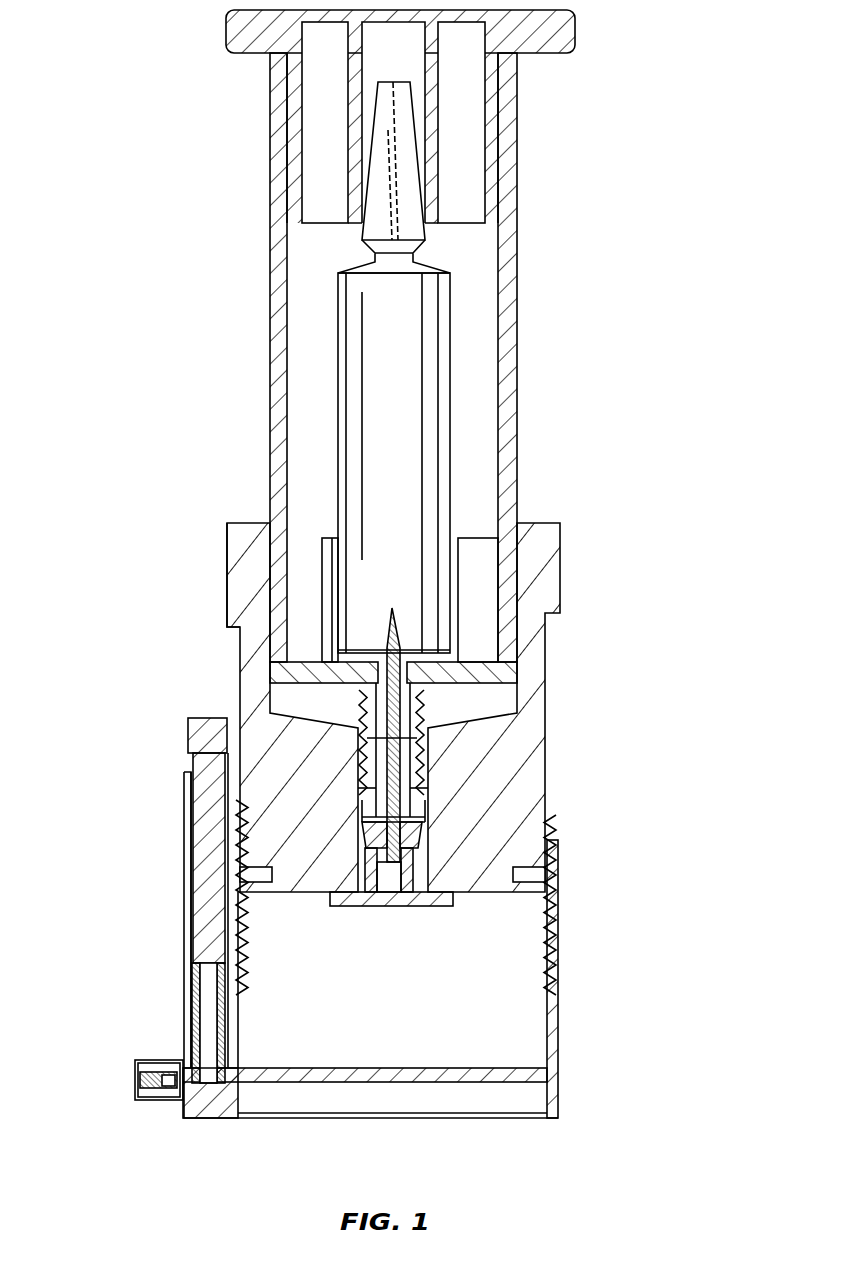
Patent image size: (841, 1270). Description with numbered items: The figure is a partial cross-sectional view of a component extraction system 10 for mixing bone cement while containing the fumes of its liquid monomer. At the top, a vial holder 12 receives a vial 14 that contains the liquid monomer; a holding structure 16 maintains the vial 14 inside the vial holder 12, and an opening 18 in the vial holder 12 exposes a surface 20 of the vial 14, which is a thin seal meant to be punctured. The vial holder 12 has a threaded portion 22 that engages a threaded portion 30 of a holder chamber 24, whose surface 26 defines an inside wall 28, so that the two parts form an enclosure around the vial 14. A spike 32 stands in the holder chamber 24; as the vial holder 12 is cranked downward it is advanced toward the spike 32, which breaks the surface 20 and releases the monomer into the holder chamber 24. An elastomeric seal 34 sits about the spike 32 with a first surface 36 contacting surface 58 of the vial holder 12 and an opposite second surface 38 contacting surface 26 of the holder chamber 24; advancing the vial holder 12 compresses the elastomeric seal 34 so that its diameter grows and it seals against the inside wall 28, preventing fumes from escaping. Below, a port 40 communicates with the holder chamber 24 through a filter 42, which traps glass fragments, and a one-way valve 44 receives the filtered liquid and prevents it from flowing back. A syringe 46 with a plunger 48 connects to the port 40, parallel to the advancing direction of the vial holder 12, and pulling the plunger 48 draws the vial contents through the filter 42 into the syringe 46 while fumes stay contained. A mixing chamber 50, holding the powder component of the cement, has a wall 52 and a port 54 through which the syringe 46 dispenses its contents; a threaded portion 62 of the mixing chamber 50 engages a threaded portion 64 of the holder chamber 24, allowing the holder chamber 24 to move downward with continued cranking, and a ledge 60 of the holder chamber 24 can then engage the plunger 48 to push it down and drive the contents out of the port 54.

The component extraction system 10 is at (692, 157).
The vial holder 12 is at (518, 393).
The vial 14 is at (450, 375).
The holding structure 16 is at (322, 542).
The opening 18 is at (425, 803).
The surface 20 is at (420, 695).
The threaded portion 22 is at (362, 703).
The holder chamber 24 is at (410, 747).
The surface 26 is at (320, 862).
The inside wall 28 is at (420, 765).
The threaded portion 30 is at (365, 768).
The spike 32 is at (392, 637).
The elastomeric seal 34 is at (407, 838).
The first surface 36 is at (410, 808).
The second surface 38 is at (400, 853).
The port 40 is at (330, 912).
The filter 42 is at (450, 903).
The one-way valve 44 is at (330, 943).
The syringe 46 is at (320, 832).
The plunger 48 is at (190, 728).
The mixing chamber 50 is at (493, 1030).
The wall 52 is at (223, 1043).
The port 54 is at (135, 1068).
The surface 58 is at (385, 803).
The ledge 60 is at (237, 628).
The threaded portion 62 is at (548, 978).
The threaded portion 64 is at (550, 820).